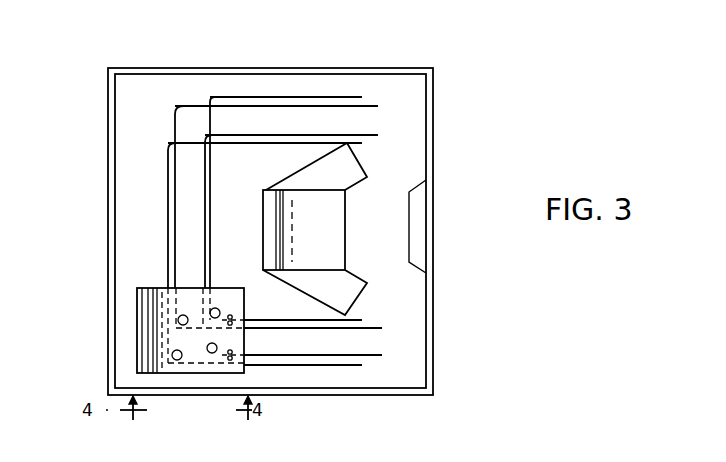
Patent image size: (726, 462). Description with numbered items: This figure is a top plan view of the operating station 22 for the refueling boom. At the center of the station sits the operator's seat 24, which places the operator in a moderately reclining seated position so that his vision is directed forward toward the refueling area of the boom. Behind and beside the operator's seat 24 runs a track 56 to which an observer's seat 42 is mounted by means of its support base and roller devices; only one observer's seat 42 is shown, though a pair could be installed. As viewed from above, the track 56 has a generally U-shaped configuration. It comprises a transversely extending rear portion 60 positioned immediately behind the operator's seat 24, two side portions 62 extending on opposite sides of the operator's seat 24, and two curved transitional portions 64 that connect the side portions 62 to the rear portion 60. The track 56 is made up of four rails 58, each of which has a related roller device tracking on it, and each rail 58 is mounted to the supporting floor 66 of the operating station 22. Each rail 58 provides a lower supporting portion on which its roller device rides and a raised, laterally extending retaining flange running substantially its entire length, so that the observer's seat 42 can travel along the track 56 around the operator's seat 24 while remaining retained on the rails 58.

The operating station 22 is at (407, 66).
The operator's seat 24 is at (272, 180).
The observer's seat 42 is at (137, 318).
The track 56 is at (157, 187).
The rails 58 is at (286, 104).
The rear portion 60 is at (150, 157).
The side portions 62 is at (332, 88).
The curved transitional portions 64 is at (181, 95).
The supporting floor 66 is at (244, 223).